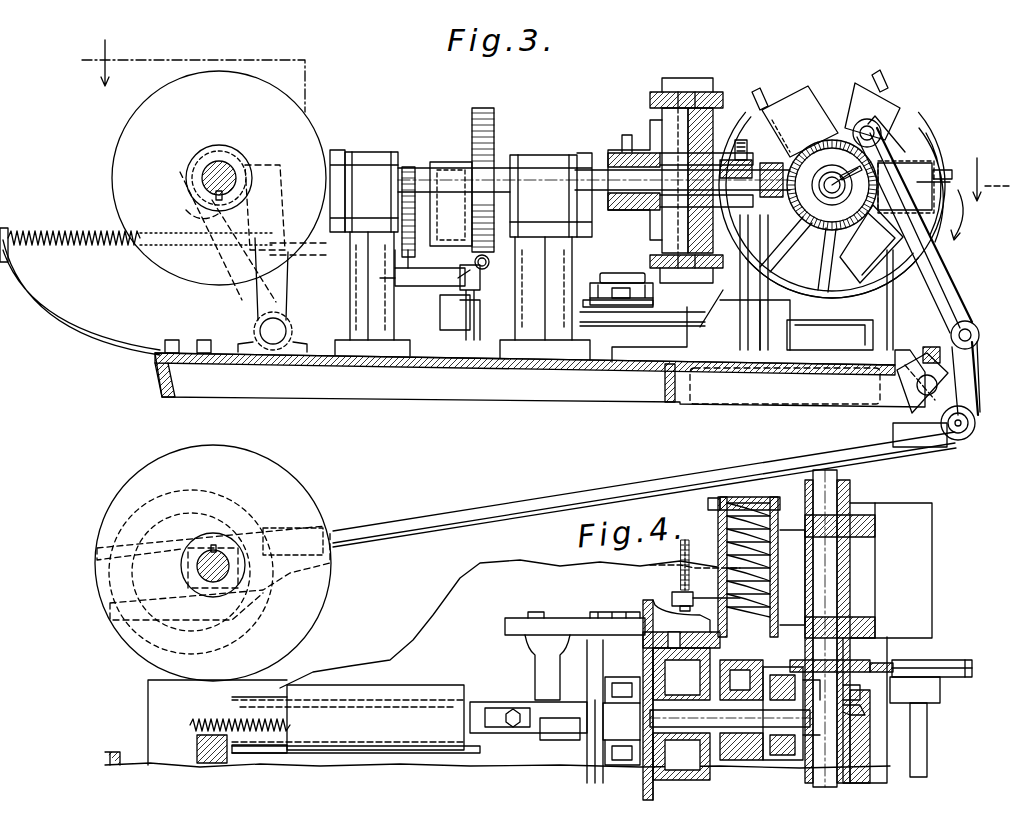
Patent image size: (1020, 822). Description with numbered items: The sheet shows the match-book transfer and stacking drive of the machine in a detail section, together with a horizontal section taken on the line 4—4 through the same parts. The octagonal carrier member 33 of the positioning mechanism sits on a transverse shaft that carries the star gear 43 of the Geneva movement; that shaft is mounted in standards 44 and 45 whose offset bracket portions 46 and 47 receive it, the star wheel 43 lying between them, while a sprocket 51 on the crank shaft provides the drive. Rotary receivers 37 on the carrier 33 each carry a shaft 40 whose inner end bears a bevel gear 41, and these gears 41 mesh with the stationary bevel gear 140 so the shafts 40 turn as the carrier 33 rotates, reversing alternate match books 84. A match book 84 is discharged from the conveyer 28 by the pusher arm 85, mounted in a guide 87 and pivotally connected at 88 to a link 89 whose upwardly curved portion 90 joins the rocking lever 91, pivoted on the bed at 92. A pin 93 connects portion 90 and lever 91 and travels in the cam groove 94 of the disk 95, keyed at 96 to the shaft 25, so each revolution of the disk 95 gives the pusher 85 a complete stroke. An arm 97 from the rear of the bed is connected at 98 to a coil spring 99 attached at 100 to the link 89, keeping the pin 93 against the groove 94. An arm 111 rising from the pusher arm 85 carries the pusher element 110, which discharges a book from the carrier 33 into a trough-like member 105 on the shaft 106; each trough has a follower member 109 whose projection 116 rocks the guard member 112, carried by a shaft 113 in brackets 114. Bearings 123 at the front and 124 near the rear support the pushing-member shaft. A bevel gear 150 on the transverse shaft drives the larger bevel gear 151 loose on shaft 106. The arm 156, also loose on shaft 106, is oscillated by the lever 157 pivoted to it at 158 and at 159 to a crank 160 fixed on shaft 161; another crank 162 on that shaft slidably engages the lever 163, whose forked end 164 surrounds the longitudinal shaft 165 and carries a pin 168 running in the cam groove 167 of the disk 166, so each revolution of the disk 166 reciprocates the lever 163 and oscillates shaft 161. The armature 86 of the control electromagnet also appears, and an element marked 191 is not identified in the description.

In FIG. 3, the section line 4— 4 is at (538, 120).
In FIG. 3, the shaft 25 is at (205, 178).
In FIG. 4, the shaft 25 is at (197, 748).
In FIG. 3, the conveyer 28 is at (598, 292).
In FIG. 4, the conveyer 28 is at (598, 766).
In FIG. 3, the frame or carrier member 33 is at (705, 122).
In FIG. 3, the rotary receiver 37 is at (705, 95).
In FIG. 4, the rotary receiver 37 is at (652, 615).
In FIG. 3, the shaft 40 is at (665, 130).
In FIG. 4, the shaft 40 is at (700, 660).
In FIG. 3, the gear 41 is at (663, 206).
In FIG. 4, the gear 41 is at (730, 718).
In FIG. 3, the star gear 43 is at (494, 113).
In FIG. 3, the standard 44 is at (543, 247).
In FIG. 3, the standard 45 is at (371, 246).
In FIG. 3, the offset upper arm or bracket portion 46 is at (553, 157).
In FIG. 3, the offset upper arm or bracket portion 47 is at (364, 152).
In FIG. 3, the sprocket 51 is at (415, 166).
In FIG. 3, the match book 84 is at (628, 275).
In FIG. 4, the match book 84 is at (740, 508).
In FIG. 3, the pusher arm 85 is at (598, 275).
In FIG. 4, the pusher arm 85 is at (545, 735).
In FIG. 4, the armature 86 is at (128, 748).
In FIG. 3, the guide 87 is at (465, 285).
In FIG. 4, the guide 87 is at (440, 695).
In FIG. 4, the pivotal connection 88 is at (480, 728).
In FIG. 3, the link 89 is at (320, 246).
In FIG. 4, the link 89 is at (418, 752).
In FIG. 3, the upwardly curved portion 90 is at (242, 237).
In FIG. 3, the rocking lever 91 is at (258, 290).
In FIG. 3, the pivot 92 is at (272, 346).
In FIG. 3, the pin 93 is at (262, 172).
In FIG. 3, the cam groove 94 is at (252, 152).
In FIG. 3, the disk 95 is at (305, 133).
In FIG. 3, the key 96 is at (219, 198).
In FIG. 3, the arm 97 is at (84, 340).
In FIG. 3, the spring connection 98 is at (14, 232).
In FIG. 3, the coil spring 99 is at (55, 235).
In FIG. 4, the coil spring 99 is at (192, 722).
In FIG. 3, the spring connection 100 is at (292, 225).
In FIG. 3, the trough-like member 105 is at (815, 103).
In FIG. 4, the trough-like member 105 is at (932, 521).
In FIG. 3, the shaft 106 is at (852, 164).
In FIG. 4, the shaft 106 is at (838, 492).
In FIG. 3, the follower member 109 is at (790, 100).
In FIG. 4, the pusher element 110 is at (562, 618).
In FIG. 4, the arm 111 is at (548, 672).
In FIG. 4, the guard member 112 is at (716, 535).
In FIG. 4, the shaft 113 is at (684, 565).
In FIG. 4, the bracket 114 is at (672, 599).
In FIG. 3, the projection 116 is at (765, 90).
In FIG. 4, the projection 116 is at (708, 503).
In FIG. 3, the bearing 123 is at (812, 320).
In FIG. 3, the bearing 124 is at (358, 310).
In FIG. 3, the bevel gear 140 is at (705, 162).
In FIG. 4, the bevel gear 140 is at (722, 690).
In FIG. 3, the bevel gear 150 is at (828, 198).
In FIG. 4, the bevel gear 150 is at (785, 735).
In FIG. 3, the bevel gear 151 is at (838, 258).
In FIG. 4, the bevel gear 151 is at (862, 712).
In FIG. 3, the arm 156 is at (902, 118).
In FIG. 3, the lever 157 is at (935, 282).
In FIG. 4, the lever 157 is at (972, 668).
In FIG. 3, the pivotal connection 158 is at (882, 133).
In FIG. 4, the pivotal connection 158 is at (862, 692).
In FIG. 3, the pivot 159 is at (979, 332).
In FIG. 3, the crank 160 is at (982, 392).
In FIG. 4, the crank 160 is at (935, 660).
In FIG. 3, the shaft 161 is at (920, 410).
In FIG. 4, the shaft 161 is at (928, 752).
In FIG. 3, the crank 162 is at (985, 410).
In FIG. 3, the lever 163 is at (706, 470).
In FIG. 4, the forked end 164 is at (213, 572).
In FIG. 4, the shaft 165 is at (246, 560).
In FIG. 4, the disk 166 is at (218, 456).
In FIG. 4, the cam groove 167 is at (170, 507).
In FIG. 4, the pin 168 is at (274, 555).
In FIG. 3, the guide arc 191 is at (945, 156).